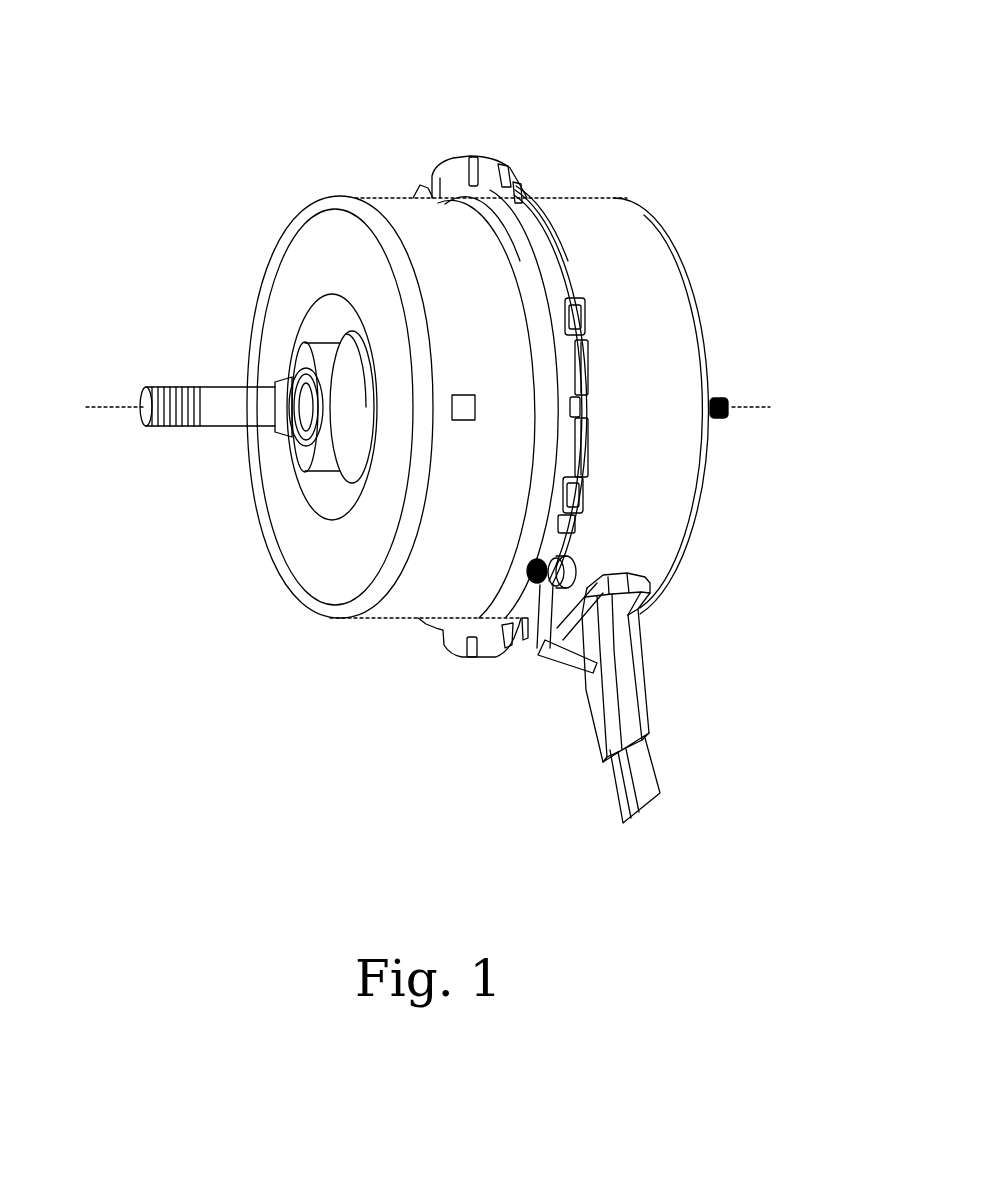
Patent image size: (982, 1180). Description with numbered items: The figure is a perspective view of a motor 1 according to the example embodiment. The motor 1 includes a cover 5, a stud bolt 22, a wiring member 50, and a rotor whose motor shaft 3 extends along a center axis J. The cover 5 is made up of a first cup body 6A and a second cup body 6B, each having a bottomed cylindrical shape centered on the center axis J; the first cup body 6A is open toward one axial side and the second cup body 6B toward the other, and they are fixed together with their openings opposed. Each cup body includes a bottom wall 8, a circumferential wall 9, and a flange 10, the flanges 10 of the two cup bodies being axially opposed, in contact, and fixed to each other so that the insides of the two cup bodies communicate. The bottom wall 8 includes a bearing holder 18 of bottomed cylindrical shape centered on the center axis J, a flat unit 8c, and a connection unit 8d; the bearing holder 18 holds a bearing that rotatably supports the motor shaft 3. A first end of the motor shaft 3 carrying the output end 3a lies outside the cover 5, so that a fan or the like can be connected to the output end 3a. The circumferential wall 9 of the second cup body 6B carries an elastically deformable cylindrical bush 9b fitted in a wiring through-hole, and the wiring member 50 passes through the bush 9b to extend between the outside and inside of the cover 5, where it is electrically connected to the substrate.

The motor 1 is at (706, 84).
The center axis J is at (117, 393).
The cover 5 is at (613, 84).
The first cup body 6A is at (399, 188).
The second cup body 6B is at (583, 188).
The bottom wall 8 is at (347, 419).
The flat unit 8c is at (330, 572).
The connection unit 8d is at (335, 503).
The bearing holder 18 is at (342, 470).
The motor shaft 3 is at (207, 407).
The output end 3a is at (180, 424).
The flange 10 is at (540, 243).
The circumferential wall 9 is at (578, 510).
The bush 9b is at (625, 692).
The wiring member 50 is at (643, 769).
The stud bolt 22 is at (728, 391).